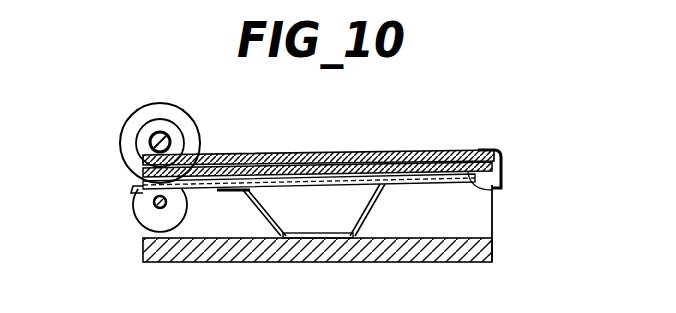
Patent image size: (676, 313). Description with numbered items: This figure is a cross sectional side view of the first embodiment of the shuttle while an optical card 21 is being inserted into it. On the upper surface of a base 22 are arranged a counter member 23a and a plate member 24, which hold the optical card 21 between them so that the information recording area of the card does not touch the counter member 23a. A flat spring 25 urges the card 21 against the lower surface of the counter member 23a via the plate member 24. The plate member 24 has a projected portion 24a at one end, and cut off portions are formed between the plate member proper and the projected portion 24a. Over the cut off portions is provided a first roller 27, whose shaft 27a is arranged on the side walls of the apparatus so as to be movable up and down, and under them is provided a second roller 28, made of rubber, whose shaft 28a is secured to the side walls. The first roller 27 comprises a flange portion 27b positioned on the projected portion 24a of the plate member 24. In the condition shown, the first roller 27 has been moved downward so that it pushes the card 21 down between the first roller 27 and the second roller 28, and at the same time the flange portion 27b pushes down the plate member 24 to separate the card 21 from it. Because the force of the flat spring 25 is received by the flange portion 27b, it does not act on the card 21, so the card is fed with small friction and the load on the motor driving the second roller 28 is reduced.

The optical card 21 is at (329, 152).
The base 22 is at (492, 246).
The counter member 23a is at (489, 150).
The plate member 24 is at (492, 200).
The projected portion 24a is at (140, 187).
The flat spring 25 is at (372, 203).
The first roller 27 is at (141, 108).
The shaft 27a is at (169, 137).
The flange portion 27b is at (177, 107).
The second roller 28 is at (185, 220).
The shaft 28a is at (156, 207).